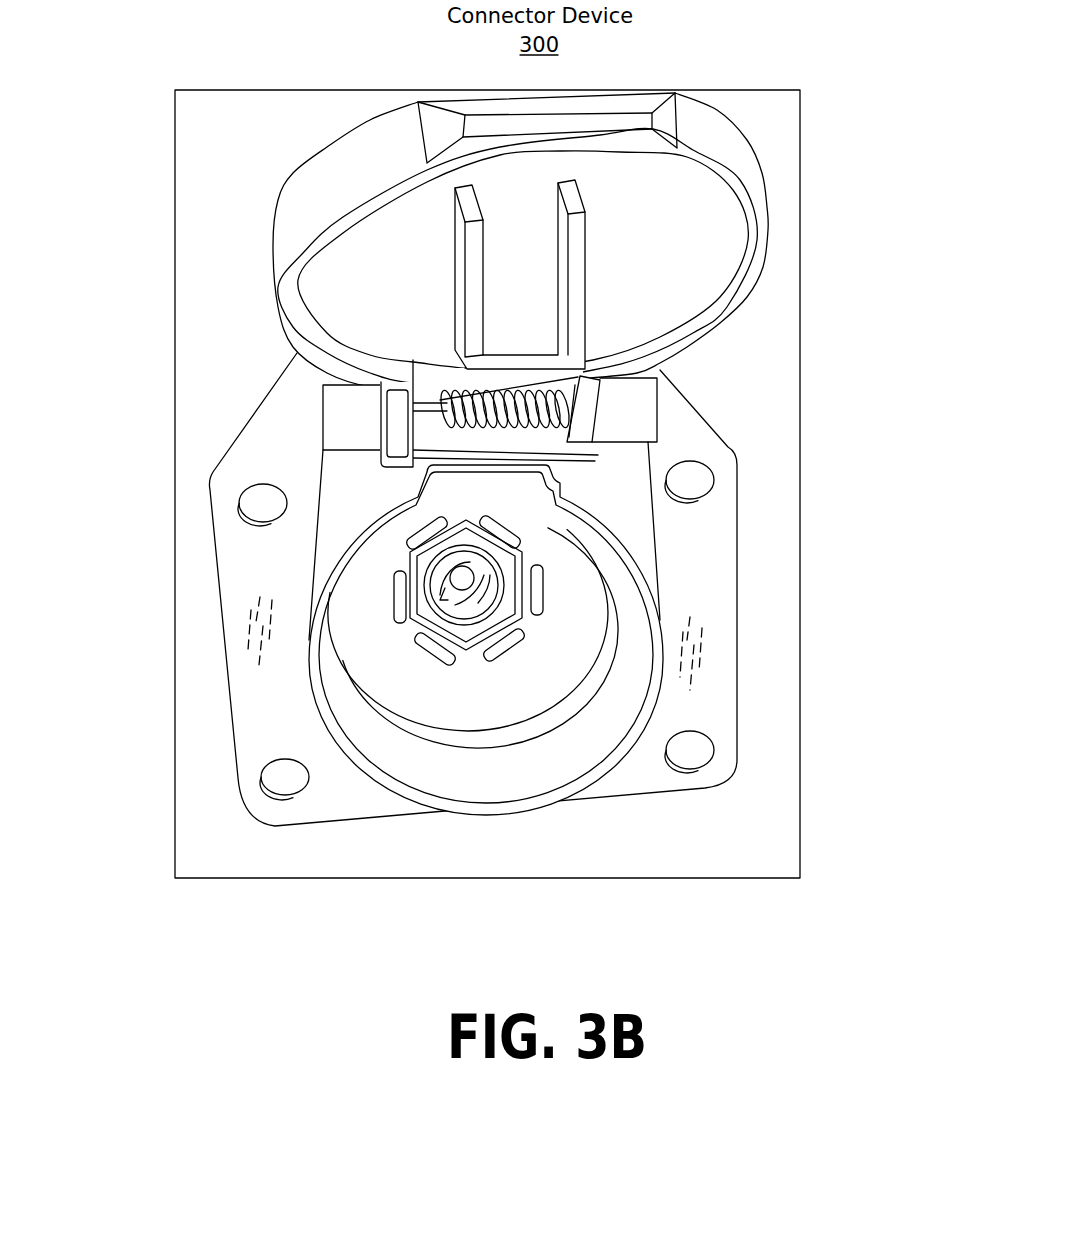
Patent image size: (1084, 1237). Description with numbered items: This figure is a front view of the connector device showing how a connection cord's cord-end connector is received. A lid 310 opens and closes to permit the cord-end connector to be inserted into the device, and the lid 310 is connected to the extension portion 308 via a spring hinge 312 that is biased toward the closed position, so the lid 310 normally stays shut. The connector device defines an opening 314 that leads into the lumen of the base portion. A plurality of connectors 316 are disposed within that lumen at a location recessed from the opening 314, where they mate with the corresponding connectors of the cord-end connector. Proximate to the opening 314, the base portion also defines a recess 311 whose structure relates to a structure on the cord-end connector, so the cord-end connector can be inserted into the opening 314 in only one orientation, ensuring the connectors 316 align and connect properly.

The extension portion 308 is at (264, 718).
The lid 310 is at (763, 185).
The recess 311 is at (583, 452).
The spring hinge 312 is at (660, 370).
The opening 314 is at (612, 765).
The connectors 316 is at (541, 645).